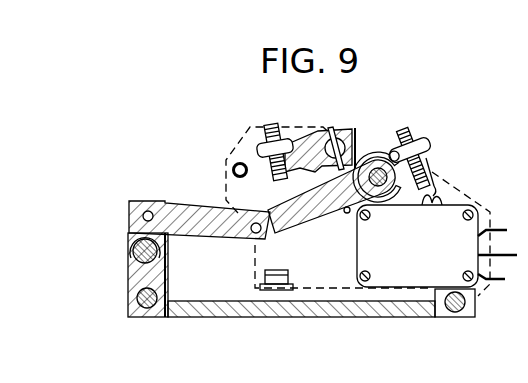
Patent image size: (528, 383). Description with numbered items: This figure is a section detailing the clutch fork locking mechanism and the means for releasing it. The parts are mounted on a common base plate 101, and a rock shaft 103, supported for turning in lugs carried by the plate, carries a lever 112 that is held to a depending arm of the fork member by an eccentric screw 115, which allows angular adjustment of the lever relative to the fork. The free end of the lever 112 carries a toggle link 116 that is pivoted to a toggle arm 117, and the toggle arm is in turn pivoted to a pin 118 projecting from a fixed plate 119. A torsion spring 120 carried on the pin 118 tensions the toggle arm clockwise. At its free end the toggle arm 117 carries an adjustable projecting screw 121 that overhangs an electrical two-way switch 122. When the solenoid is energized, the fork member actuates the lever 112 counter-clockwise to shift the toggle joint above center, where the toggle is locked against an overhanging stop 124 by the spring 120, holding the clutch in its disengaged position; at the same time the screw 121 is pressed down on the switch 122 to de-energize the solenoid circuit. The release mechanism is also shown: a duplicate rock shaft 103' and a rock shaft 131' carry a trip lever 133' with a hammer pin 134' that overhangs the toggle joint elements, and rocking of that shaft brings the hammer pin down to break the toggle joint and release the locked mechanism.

The base plate 101 is at (254, 318).
The rock shaft 103 is at (116, 309).
The rock shaft 103' is at (458, 323).
The lever 112 is at (168, 270).
The eccentric screw 115 is at (133, 253).
The toggle link 116 is at (197, 207).
The toggle arm 117 is at (319, 208).
The pin 118 is at (379, 188).
The fixed plate 119 is at (468, 178).
The torsion spring 120 is at (376, 154).
The adjustable projecting screw 121 is at (420, 138).
The electrical two-way switch 122 is at (440, 203).
The overhanging stop 124 is at (232, 164).
The rock shaft 131' is at (352, 133).
The trip lever 133' is at (320, 161).
The hammer pin 134' is at (283, 139).